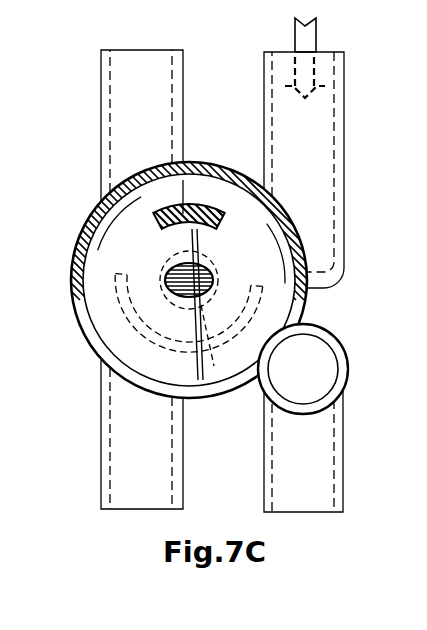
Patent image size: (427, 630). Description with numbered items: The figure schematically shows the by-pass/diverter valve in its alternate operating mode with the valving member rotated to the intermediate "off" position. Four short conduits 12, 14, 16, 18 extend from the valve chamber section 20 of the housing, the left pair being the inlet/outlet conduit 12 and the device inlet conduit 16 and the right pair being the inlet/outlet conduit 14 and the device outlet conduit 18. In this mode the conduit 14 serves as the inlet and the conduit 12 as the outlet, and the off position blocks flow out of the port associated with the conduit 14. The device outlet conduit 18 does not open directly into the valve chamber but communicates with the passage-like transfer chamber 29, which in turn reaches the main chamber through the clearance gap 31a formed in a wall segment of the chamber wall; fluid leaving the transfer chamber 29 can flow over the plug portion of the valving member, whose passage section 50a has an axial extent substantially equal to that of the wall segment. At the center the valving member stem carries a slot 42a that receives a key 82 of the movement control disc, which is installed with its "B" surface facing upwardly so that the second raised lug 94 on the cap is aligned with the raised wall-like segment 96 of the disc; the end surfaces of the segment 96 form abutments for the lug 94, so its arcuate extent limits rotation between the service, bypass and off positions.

The inlet/outlet conduit 12 is at (128, 135).
The inlet/outlet conduit 14 is at (318, 165).
The device inlet conduit 16 is at (122, 438).
The device outlet conduit 18 is at (308, 460).
The valve chamber section 20 is at (306, 308).
The transfer chamber 29 is at (312, 377).
The clearance gap 31a is at (268, 417).
The slot 42a is at (271, 304).
The passage section 50a is at (278, 284).
The key 82 is at (205, 303).
The second raised lug 94 is at (226, 216).
The raised wall-like segment 96 is at (76, 300).